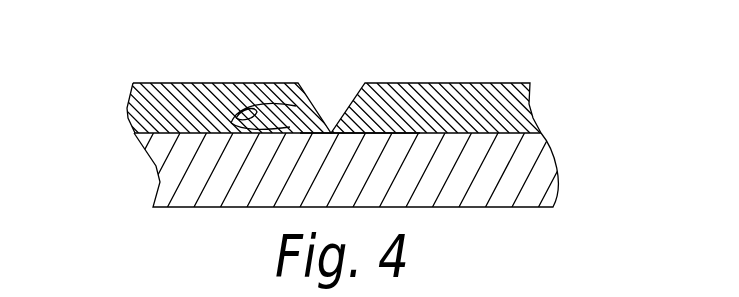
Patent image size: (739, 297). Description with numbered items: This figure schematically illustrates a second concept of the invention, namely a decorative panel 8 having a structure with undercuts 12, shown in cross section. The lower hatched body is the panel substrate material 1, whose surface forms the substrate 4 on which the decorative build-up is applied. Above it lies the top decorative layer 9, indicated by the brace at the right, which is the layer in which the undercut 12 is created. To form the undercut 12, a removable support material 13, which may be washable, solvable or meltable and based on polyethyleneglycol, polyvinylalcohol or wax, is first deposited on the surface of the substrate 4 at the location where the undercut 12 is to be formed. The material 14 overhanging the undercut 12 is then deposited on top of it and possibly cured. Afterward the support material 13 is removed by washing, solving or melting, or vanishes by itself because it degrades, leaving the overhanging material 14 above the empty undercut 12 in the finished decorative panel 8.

The panel substrate material 1 is at (525, 183).
The substrate 4 is at (366, 150).
The decorative panel 8 is at (45, 70).
The top decorative layer 9 is at (568, 85).
The undercut 12 is at (222, 138).
The support material 13 is at (159, 82).
The material overhanging the undercut 14 is at (246, 85).